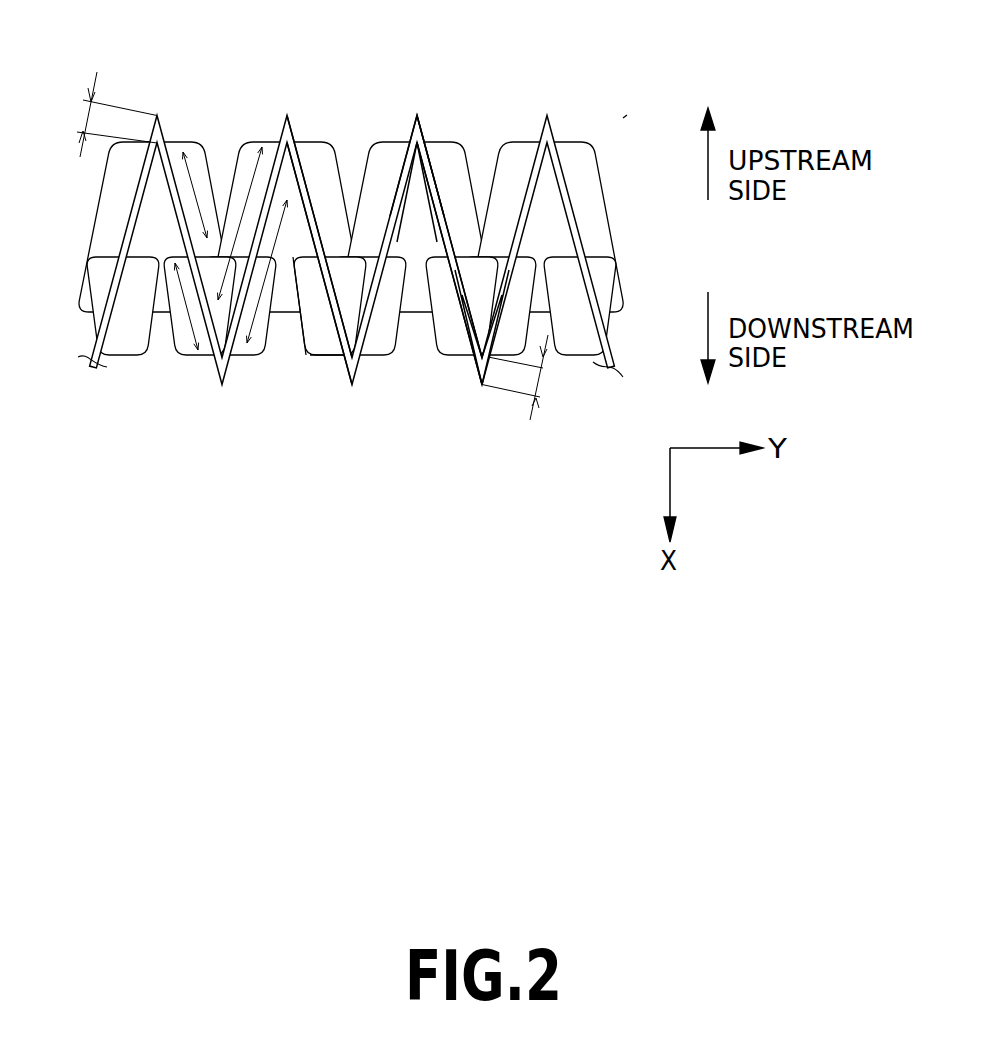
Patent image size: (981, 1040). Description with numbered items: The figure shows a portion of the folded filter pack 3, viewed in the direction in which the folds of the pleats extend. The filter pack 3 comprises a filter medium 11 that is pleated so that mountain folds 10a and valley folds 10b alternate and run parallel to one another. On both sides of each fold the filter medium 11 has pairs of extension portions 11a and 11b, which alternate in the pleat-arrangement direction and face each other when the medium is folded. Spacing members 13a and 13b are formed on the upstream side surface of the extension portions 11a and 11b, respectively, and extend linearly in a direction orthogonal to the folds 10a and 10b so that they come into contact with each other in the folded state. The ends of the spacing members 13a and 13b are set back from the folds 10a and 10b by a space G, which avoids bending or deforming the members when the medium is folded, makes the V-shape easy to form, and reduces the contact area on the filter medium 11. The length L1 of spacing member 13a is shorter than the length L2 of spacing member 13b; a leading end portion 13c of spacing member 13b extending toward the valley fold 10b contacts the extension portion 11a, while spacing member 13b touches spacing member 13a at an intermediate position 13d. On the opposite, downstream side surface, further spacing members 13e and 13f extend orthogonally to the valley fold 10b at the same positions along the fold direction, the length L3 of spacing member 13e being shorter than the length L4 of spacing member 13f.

The filter pack 3 is at (634, 112).
The mountain fold 10a is at (417, 113).
The valley fold 10b is at (483, 386).
The filter medium 11 is at (600, 292).
The extension portion 11a is at (298, 140).
The extension portion 11b is at (432, 142).
The spacing member 13a is at (337, 172).
The spacing member 13b is at (388, 175).
The leading end portion 13c is at (316, 342).
The intermediate position 13d is at (297, 342).
The spacing member 13e is at (328, 348).
The spacing member 13f is at (385, 345).
The space G is at (80, 106).
The length L1 is at (186, 148).
The length L2 is at (256, 143).
The length L3 is at (178, 352).
The length L4 is at (247, 346).